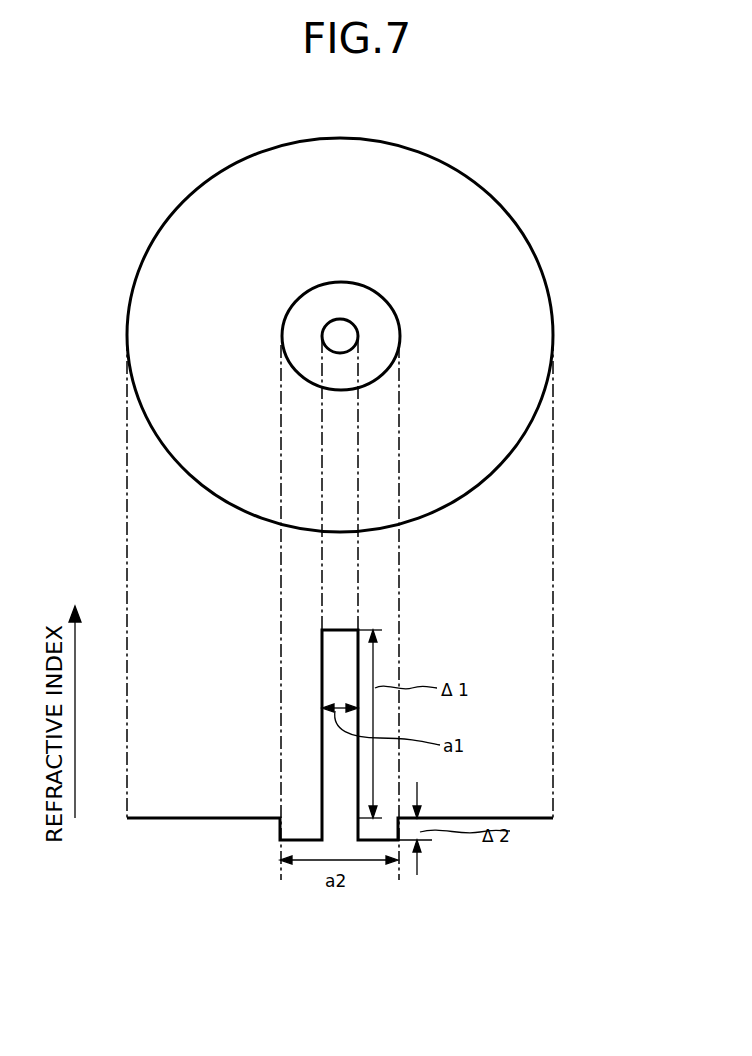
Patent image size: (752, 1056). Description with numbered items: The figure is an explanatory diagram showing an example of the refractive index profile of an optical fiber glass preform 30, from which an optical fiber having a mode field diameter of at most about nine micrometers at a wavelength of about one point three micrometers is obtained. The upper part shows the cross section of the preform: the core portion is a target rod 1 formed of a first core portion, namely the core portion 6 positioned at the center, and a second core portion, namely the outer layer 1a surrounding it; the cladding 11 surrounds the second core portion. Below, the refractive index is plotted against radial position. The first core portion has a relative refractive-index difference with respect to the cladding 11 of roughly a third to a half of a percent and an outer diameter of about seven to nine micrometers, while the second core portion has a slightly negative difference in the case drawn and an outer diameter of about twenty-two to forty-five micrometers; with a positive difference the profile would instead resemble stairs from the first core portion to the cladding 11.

The optical fiber glass preform 30 is at (375, 310).
The target rod 1 is at (397, 303).
The outer layer 1a is at (363, 303).
The core portion 6 is at (358, 337).
The cladding 11 is at (553, 333).